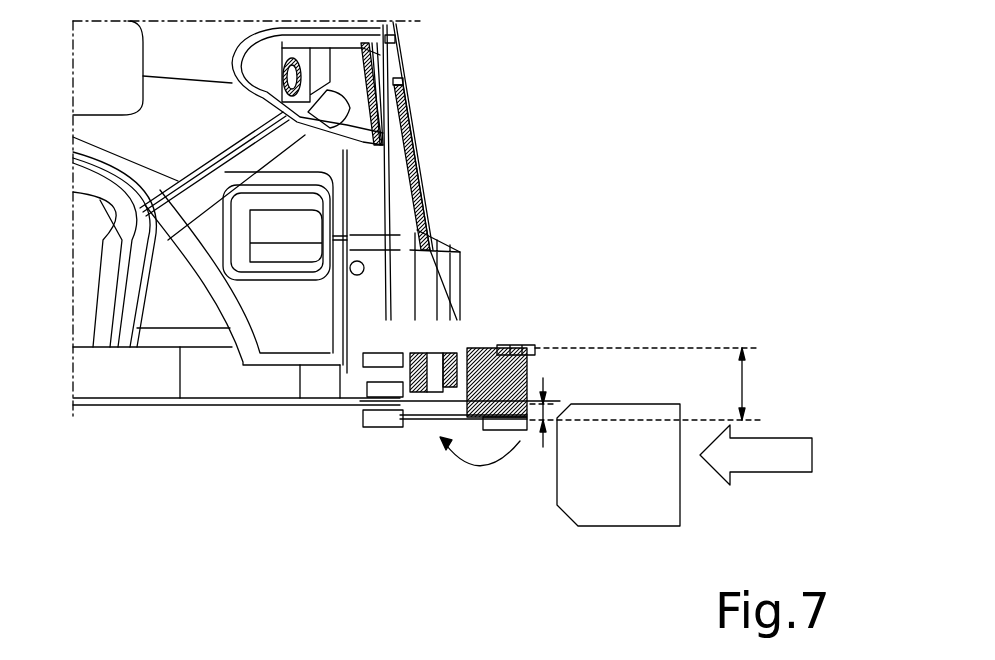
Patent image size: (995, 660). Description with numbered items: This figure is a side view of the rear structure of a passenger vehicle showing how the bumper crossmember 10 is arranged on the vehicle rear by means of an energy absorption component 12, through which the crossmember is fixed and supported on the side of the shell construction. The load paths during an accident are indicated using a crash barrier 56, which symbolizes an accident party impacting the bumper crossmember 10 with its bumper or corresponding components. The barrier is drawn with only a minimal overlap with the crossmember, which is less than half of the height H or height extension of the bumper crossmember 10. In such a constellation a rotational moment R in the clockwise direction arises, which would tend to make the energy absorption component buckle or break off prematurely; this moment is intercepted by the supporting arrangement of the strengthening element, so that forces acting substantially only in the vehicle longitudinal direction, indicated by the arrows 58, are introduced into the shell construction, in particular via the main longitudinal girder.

The bumper crossmember 10 is at (543, 329).
The energy absorption component 12 is at (493, 324).
The crash barrier 56 is at (613, 517).
The arrows 58 is at (383, 435).
The rotational moment R is at (482, 470).
The height H is at (756, 384).